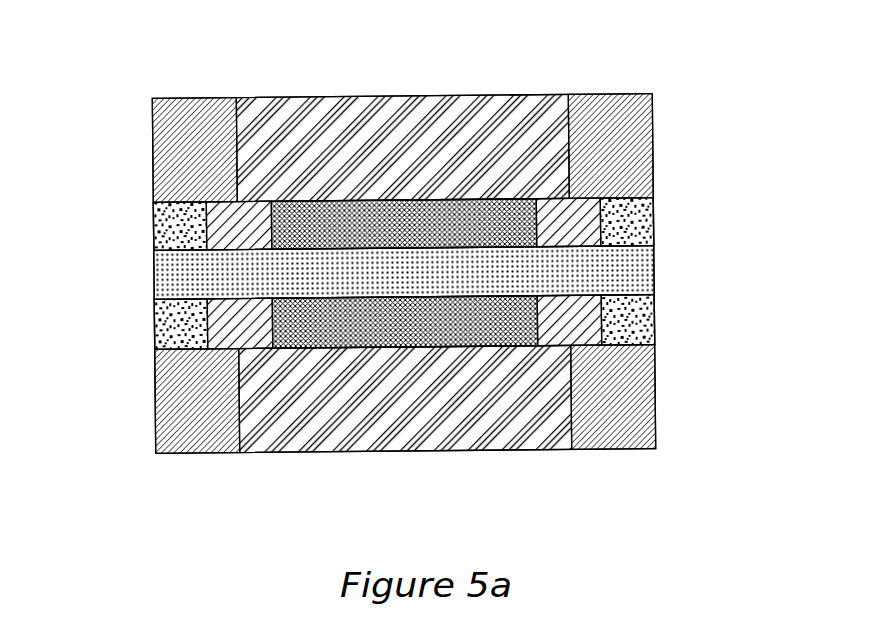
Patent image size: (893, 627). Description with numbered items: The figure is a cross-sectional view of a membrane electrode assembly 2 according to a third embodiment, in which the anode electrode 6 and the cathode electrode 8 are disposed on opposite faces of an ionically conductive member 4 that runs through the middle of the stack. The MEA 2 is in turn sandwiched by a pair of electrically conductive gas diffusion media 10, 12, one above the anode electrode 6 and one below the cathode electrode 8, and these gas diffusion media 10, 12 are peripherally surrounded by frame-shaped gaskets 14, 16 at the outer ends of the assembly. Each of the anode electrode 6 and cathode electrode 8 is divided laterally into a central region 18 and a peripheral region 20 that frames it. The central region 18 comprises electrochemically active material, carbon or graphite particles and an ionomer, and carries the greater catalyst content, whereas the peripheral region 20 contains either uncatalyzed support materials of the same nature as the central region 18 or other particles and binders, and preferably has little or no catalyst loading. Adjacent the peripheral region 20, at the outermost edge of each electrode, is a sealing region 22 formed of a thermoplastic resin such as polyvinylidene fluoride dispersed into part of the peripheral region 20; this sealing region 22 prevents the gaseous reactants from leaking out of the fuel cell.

The membrane electrode assembly 2 is at (732, 104).
The ionically conductive member 4 is at (654, 265).
The anode electrode 6 is at (672, 216).
The cathode electrode 8 is at (675, 322).
The gas diffusion medium 10 is at (332, 118).
The gas diffusion medium 12 is at (432, 437).
The gasket 14 is at (190, 138).
The gasket 16 is at (158, 423).
The central region 18 is at (417, 222).
The peripheral region 20 is at (210, 230).
The sealing region 22 is at (157, 243).